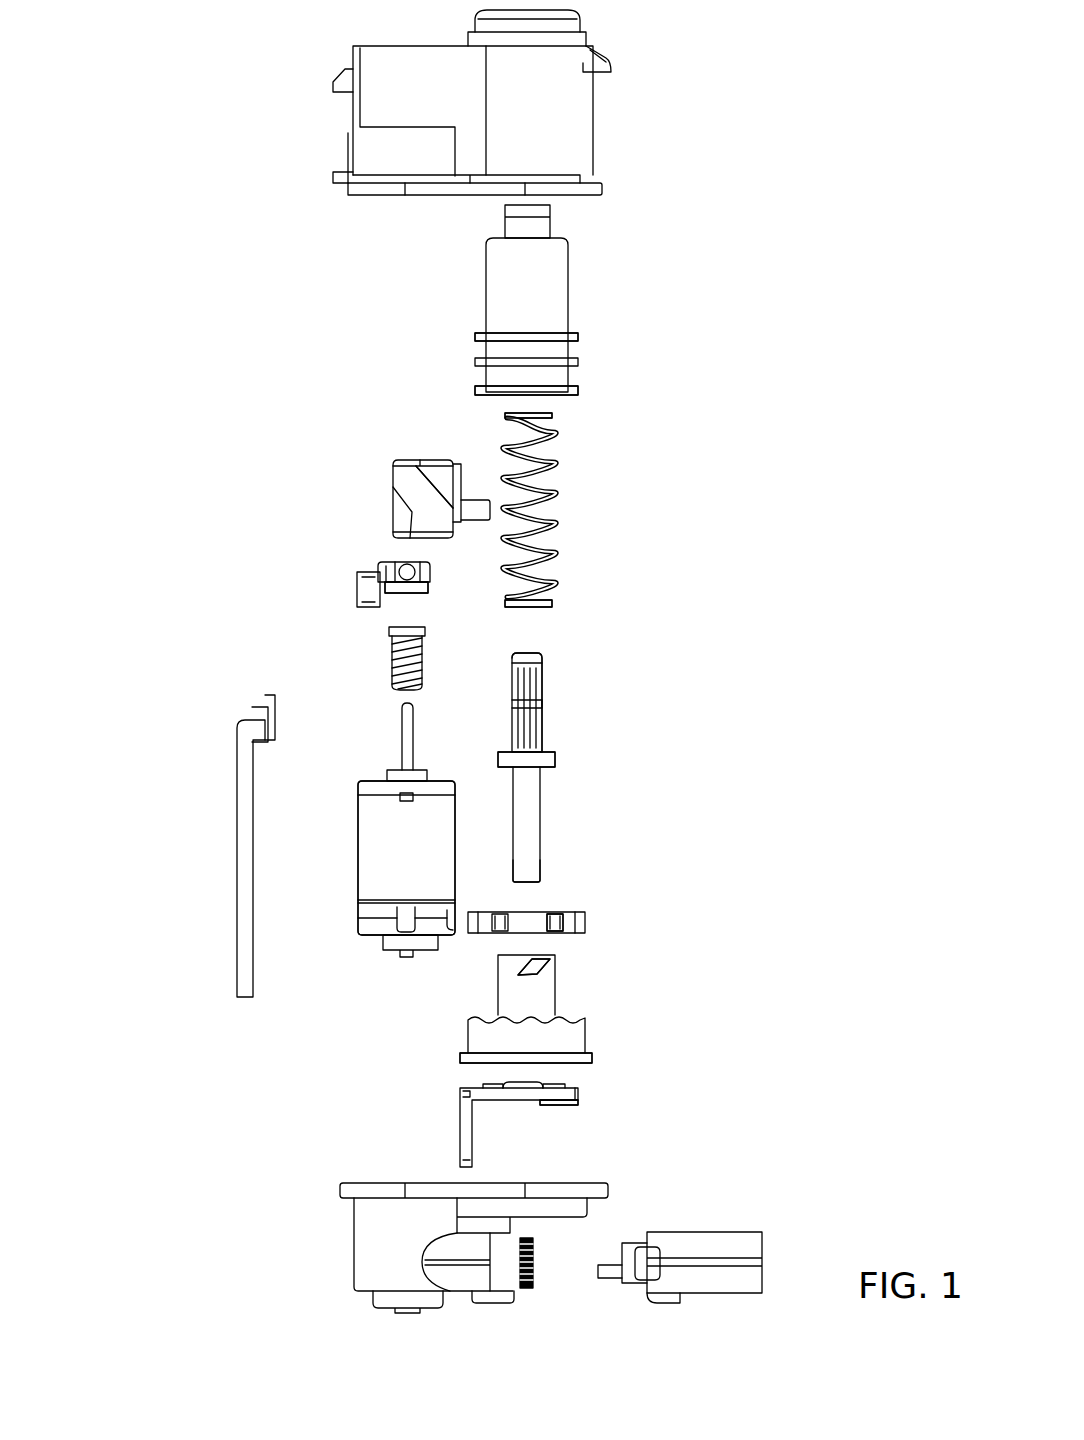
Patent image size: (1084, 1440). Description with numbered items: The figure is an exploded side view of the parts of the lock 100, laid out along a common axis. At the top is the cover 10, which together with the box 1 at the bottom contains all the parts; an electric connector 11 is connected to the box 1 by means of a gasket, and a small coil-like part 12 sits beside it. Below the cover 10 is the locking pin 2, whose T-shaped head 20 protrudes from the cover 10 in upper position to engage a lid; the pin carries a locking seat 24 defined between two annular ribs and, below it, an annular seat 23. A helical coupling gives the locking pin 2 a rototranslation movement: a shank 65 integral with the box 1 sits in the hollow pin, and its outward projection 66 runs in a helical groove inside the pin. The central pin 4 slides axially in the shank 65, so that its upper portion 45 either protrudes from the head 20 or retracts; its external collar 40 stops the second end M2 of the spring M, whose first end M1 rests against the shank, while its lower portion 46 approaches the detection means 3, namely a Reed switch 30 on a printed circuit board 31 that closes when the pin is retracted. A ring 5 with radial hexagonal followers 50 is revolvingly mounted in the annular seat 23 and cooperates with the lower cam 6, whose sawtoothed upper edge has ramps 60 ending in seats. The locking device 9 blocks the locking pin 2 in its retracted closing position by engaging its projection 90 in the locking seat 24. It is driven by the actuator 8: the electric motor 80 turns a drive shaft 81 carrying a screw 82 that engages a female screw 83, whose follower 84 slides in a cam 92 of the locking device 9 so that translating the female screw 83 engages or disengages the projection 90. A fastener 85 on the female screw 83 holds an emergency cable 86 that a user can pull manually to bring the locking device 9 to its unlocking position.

The lock 100 is at (175, 235).
The cover 10 is at (571, 128).
The head 20 is at (558, 215).
The locking pin 2 is at (545, 308).
The locking seat 24 is at (468, 341).
The annular seat 23 is at (572, 377).
The locking device 9 is at (393, 455).
The projection 90 is at (478, 503).
The cam 92 is at (410, 500).
The spring M is at (555, 565).
The second end M2 is at (555, 413).
The first end M1 is at (543, 607).
The follower 84 is at (400, 560).
The fastener 85 is at (365, 592).
The screw 82 is at (392, 655).
The female screw 83 is at (430, 582).
The emergency cable 86 is at (243, 822).
The drive shaft 81 is at (405, 745).
The electric motor 80 is at (390, 847).
The actuator 8 is at (335, 945).
The central pin 4 is at (542, 805).
The upper portion 45 is at (530, 652).
The external collar 40 is at (542, 758).
The lower portion 46 is at (523, 882).
The ring 5 is at (593, 913).
The followers 50 is at (553, 922).
The shank 65 is at (510, 992).
The projection 66 is at (535, 968).
The lower cam 6 is at (595, 1037).
The ramps 60 is at (470, 1018).
The detection means 3 is at (455, 1103).
The Reed switch 30 is at (530, 1083).
The printed circuit board 31 is at (518, 1093).
The box 1 is at (412, 1263).
The terminal coil 12 is at (537, 1263).
The electric connector 11 is at (715, 1250).